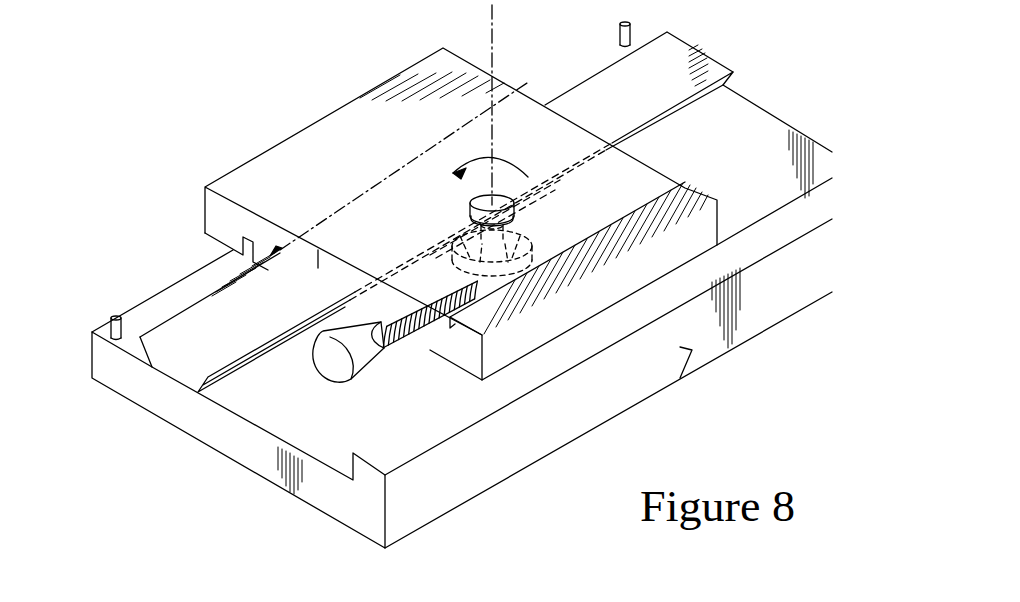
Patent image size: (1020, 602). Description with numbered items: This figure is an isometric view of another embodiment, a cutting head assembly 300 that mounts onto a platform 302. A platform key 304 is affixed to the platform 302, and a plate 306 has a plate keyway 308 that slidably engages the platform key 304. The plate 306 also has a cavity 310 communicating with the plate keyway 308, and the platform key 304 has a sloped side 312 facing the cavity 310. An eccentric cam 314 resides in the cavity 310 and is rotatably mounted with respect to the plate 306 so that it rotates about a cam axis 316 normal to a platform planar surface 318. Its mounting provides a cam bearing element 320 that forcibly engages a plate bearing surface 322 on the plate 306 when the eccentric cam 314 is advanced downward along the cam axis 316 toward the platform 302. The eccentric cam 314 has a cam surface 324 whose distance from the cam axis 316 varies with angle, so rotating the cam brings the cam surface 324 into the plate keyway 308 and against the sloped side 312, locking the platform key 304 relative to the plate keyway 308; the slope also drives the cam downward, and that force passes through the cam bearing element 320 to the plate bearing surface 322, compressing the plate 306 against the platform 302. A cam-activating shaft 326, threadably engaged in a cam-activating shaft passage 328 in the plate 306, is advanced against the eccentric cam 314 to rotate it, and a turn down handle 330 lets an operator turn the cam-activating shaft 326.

The cutting head assembly 300 is at (203, 82).
The platform 302 is at (255, 472).
The platform key 304 is at (160, 365).
The plate 306 is at (200, 211).
The plate keyway 308 is at (320, 268).
The cavity 310 is at (448, 253).
The sloped side 312 is at (258, 352).
The eccentric cam 314 is at (459, 210).
The cam axis 316 is at (490, 28).
The platform planar surface 318 is at (380, 422).
The cam bearing element 320 is at (520, 202).
The plate bearing surface 322 is at (495, 232).
The cam surface 324 is at (533, 250).
The cam-activating shaft 326 is at (424, 296).
The cam-activating shaft passage 328 is at (413, 316).
The turn down handle 330 is at (337, 366).